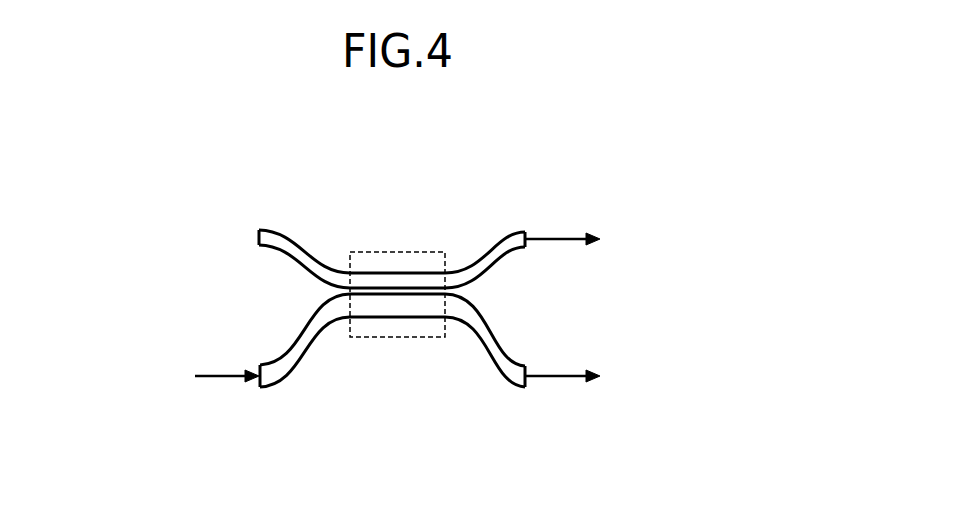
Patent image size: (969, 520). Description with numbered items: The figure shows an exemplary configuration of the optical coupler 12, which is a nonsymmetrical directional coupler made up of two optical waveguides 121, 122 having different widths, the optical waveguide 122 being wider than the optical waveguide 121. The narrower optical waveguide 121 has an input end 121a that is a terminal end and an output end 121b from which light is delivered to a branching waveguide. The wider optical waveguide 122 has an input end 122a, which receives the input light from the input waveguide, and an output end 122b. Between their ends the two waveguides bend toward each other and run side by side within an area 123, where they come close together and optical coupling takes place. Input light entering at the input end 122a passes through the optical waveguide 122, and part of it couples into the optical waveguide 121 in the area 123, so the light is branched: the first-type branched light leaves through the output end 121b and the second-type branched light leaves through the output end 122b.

The optical coupler 12 is at (422, 174).
The optical waveguide 121 is at (284, 231).
The input end 121a is at (259, 230).
The output end 121b is at (528, 232).
The optical waveguide 122 is at (300, 380).
The input end 122a is at (260, 388).
The output end 122b is at (528, 388).
The area 123 is at (395, 338).